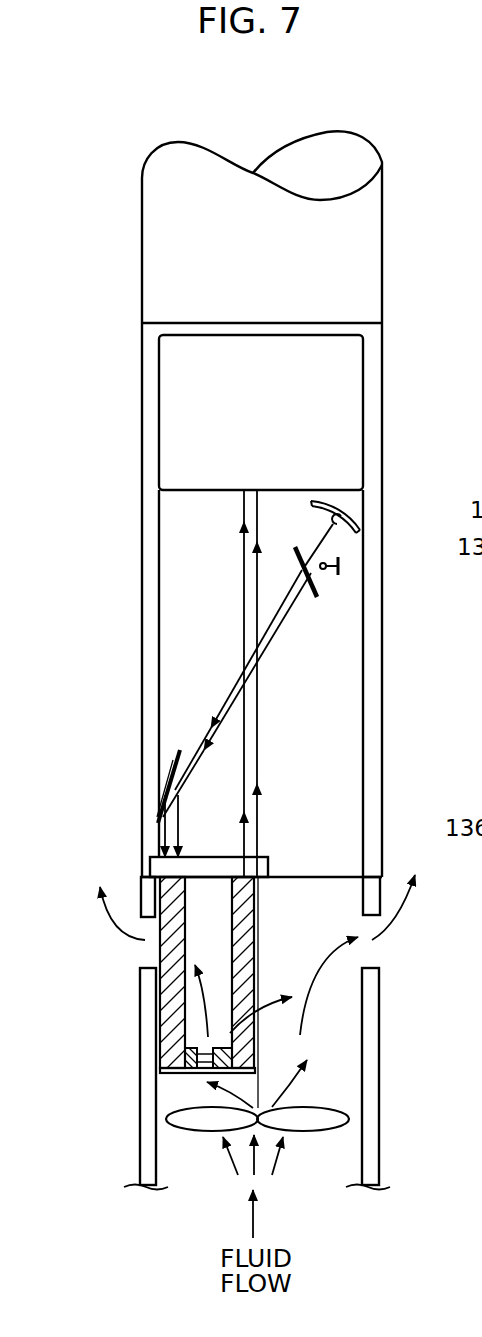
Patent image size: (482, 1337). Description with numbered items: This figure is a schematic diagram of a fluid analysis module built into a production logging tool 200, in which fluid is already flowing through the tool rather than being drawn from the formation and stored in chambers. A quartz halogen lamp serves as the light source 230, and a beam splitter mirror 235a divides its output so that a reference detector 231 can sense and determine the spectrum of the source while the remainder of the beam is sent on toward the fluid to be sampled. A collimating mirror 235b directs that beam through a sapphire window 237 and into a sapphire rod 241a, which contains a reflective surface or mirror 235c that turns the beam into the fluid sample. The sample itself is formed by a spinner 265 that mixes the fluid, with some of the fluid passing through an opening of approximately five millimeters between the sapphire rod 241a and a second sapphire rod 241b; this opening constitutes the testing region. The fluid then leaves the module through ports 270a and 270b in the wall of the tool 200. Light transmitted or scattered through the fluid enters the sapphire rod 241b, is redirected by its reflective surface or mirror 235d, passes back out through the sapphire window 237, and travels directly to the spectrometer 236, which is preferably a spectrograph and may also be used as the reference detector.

The tool 200 is at (348, 250).
The spectrometer 236 is at (338, 428).
The light source 230 is at (342, 516).
The reference detector 231 is at (341, 565).
The beam splitter mirror 235a is at (305, 595).
The collimating mirror 235b is at (165, 760).
The sapphire window 237 is at (208, 857).
The sapphire rod 241a is at (162, 1030).
The sapphire rod 241b is at (257, 985).
The reflective surface or mirror 235c is at (192, 1070).
The reflective surface or mirror 235d is at (238, 1060).
The spinner 265 is at (352, 1117).
The port 270a is at (148, 950).
The port 270b is at (370, 950).